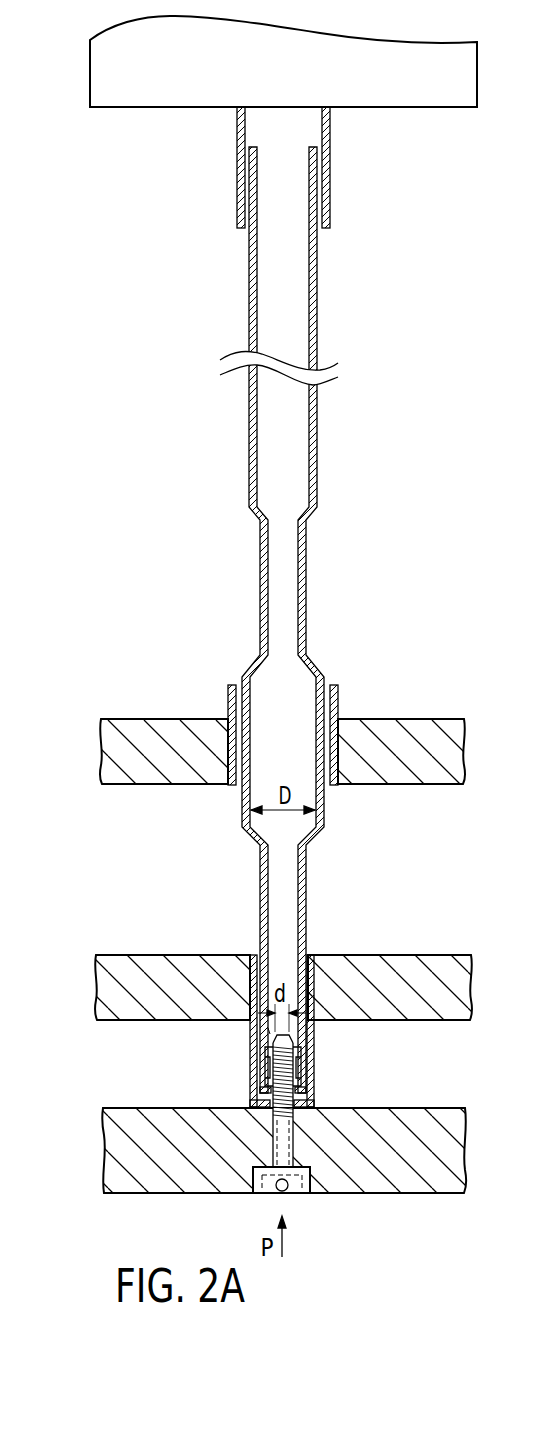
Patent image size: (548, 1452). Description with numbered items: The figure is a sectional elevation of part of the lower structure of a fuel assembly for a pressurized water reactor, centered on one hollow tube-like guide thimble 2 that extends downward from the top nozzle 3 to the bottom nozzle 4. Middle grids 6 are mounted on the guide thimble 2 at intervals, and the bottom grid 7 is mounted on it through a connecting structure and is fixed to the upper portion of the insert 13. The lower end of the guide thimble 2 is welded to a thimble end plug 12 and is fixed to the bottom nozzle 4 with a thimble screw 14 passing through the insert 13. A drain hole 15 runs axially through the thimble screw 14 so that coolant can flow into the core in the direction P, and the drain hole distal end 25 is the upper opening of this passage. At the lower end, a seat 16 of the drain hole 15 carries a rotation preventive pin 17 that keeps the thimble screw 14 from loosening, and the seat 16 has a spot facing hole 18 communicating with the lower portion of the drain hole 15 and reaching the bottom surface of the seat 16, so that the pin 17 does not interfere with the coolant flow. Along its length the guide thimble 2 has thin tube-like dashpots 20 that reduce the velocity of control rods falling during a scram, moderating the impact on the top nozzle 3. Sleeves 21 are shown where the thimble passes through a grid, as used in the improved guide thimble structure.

The guide thimble 2 is at (317, 267).
The top nozzle 3 is at (410, 107).
The bottom nozzle 4 is at (438, 1188).
The middle grid 6 is at (131, 731).
The bottom grid 7 is at (140, 964).
The thimble end plug 12 is at (307, 1076).
The insert 13 is at (317, 1041).
The thimble screw 14 is at (272, 1130).
The drain hole 15 is at (293, 1137).
The seat 16 is at (307, 1197).
The rotation preventive pin 17 is at (283, 1192).
The spot facing hole 18 is at (249, 1186).
The dashpot 20 is at (317, 590).
The sleeve 21 is at (227, 688).
The drain hole distal end 25 is at (270, 1029).